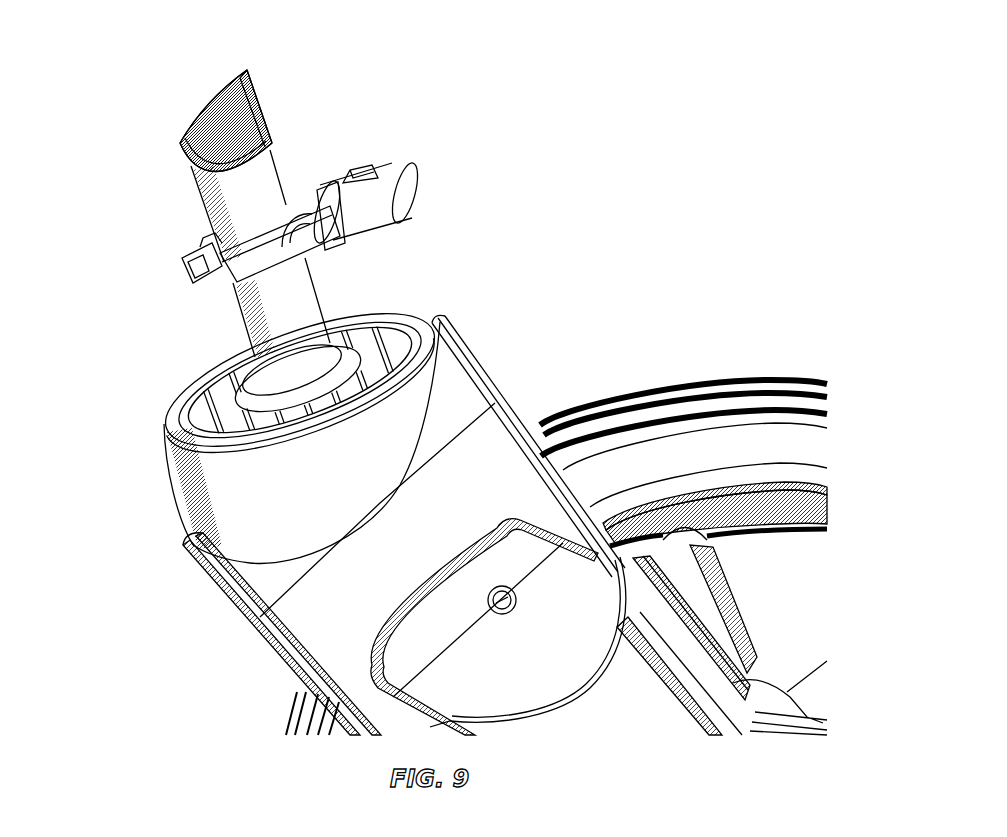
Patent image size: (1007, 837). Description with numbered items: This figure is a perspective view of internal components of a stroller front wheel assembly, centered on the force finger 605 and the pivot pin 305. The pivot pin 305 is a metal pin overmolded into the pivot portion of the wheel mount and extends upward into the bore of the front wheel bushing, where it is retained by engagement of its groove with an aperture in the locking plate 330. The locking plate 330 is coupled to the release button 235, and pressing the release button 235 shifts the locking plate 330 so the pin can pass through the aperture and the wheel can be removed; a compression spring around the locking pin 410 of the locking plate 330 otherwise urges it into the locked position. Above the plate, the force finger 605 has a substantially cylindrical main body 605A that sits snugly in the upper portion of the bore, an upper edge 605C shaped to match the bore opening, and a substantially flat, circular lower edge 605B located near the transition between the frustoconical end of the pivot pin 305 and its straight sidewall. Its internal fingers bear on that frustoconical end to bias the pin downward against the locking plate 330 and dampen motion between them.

The force finger 605 is at (268, 116).
The main body 605A is at (182, 141).
The lower edge 605B is at (190, 167).
The upper edge 605C is at (212, 102).
The release button 235 is at (414, 191).
The locking pin 410 is at (183, 258).
The locking plate 330 is at (307, 243).
The pivot pin 305 is at (262, 304).